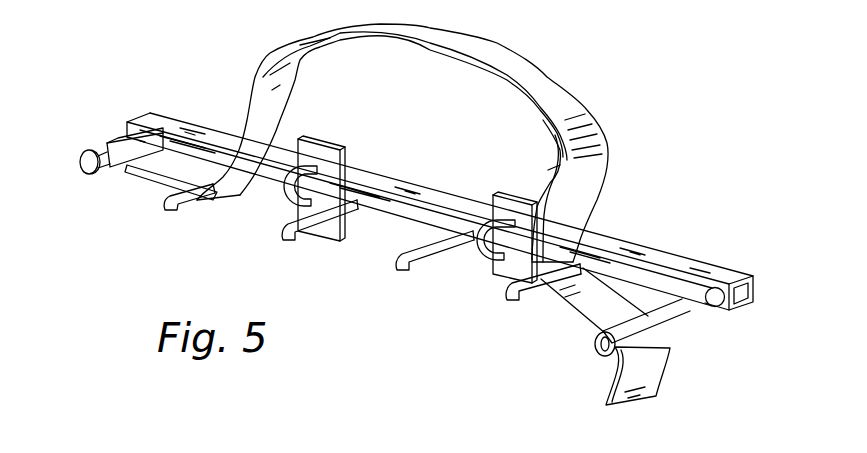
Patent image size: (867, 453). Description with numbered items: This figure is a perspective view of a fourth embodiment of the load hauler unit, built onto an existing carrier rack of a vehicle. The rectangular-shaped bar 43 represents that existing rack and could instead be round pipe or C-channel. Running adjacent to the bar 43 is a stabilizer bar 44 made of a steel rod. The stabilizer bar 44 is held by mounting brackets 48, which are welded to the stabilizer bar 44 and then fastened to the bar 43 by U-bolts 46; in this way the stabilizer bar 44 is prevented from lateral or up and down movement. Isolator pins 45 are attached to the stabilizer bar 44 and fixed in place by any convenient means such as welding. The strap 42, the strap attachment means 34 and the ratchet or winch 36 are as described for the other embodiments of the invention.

The strap attachment means 34 is at (82, 173).
The ratchet or winch 36 is at (596, 343).
The strap 42 is at (557, 90).
The rectangular-shaped bar 43 is at (407, 187).
The stabilizer bar 44 is at (360, 197).
The isolator pins 45 is at (167, 205).
The U-bolts 46 is at (287, 202).
The mounting brackets 48 is at (330, 150).